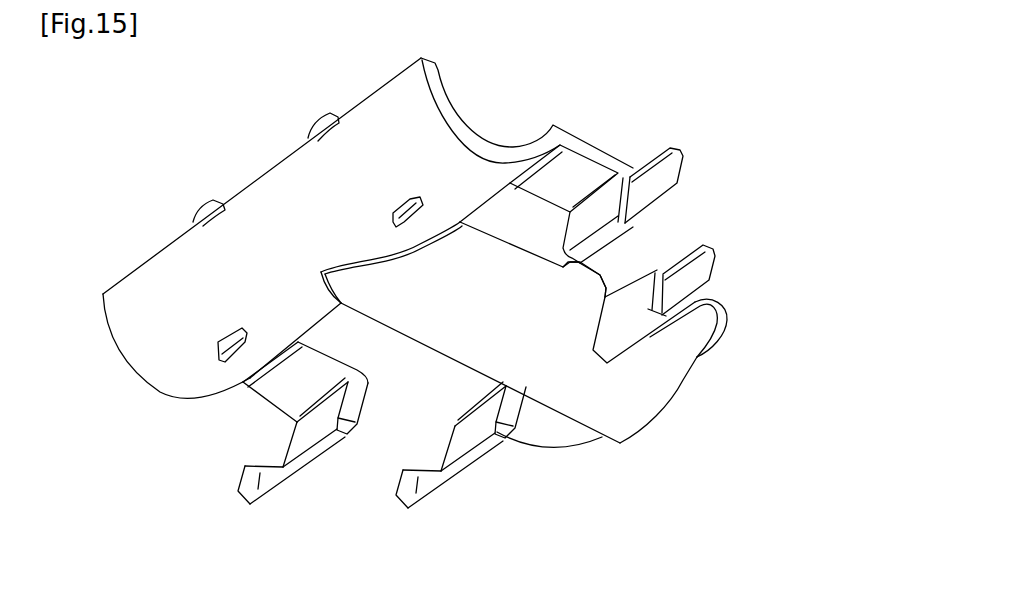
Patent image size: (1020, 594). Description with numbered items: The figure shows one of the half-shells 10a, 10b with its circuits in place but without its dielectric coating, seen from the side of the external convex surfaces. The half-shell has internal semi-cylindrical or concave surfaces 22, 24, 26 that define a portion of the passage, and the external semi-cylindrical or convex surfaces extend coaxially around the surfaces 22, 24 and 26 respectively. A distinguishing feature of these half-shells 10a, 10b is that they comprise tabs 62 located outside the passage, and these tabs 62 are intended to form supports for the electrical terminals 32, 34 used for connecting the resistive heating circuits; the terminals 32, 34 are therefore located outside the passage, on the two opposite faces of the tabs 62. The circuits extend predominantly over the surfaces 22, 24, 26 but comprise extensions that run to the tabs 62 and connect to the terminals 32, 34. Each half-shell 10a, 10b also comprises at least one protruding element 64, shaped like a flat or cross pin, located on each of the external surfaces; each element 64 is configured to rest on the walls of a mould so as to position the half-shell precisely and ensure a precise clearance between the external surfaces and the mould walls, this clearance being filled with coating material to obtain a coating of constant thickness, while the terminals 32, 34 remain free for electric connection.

The half-shell 10a is at (712, 151).
The half-shell 10b is at (433, 314).
The internal semi-cylindrical surface 22 is at (425, 157).
The internal semi-cylindrical surface 24 is at (173, 350).
The internal semi-cylindrical surface 26 is at (627, 420).
The tab 62 is at (511, 362).
The electrical terminal 32 is at (678, 183).
The electrical terminal 34 is at (699, 264).
The protruding element 64 is at (393, 213).